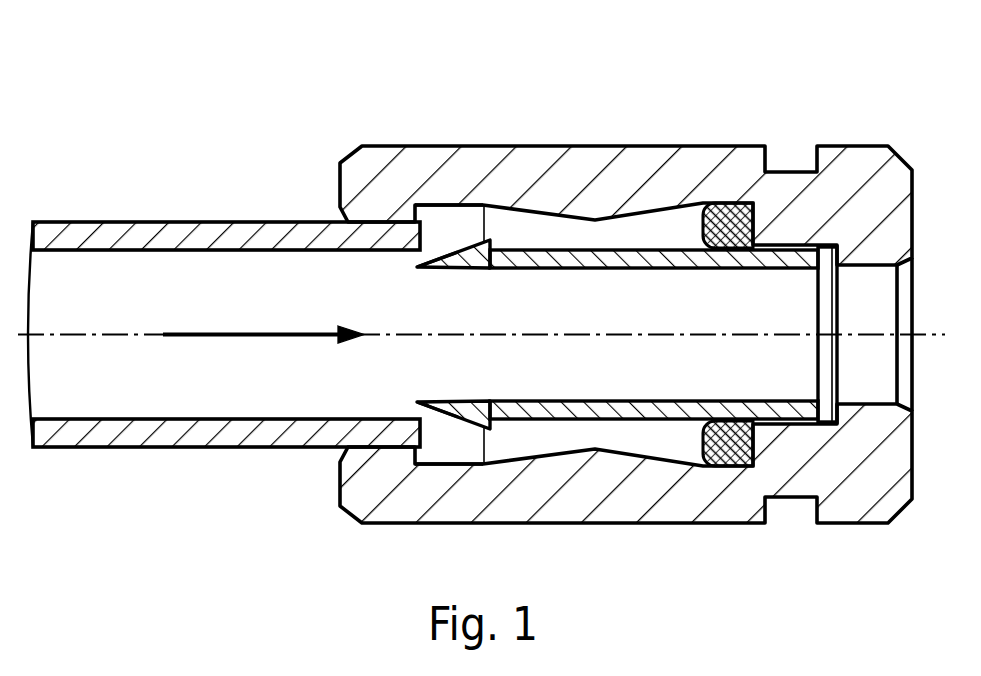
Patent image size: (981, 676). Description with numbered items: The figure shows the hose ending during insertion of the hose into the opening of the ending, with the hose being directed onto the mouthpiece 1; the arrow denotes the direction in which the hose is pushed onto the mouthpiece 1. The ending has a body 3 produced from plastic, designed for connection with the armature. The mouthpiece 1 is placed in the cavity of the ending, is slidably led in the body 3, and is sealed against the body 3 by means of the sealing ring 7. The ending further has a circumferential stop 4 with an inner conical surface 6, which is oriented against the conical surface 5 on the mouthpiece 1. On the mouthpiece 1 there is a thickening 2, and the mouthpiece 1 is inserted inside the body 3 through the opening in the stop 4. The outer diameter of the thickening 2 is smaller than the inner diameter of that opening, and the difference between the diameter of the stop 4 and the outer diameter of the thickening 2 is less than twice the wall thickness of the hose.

The mouthpiece 1 is at (527, 250).
The thickening 2 is at (488, 245).
The body 3 is at (842, 147).
The stop 4 is at (380, 222).
The conical surface 5 is at (458, 250).
The inner conical surface 6 is at (403, 213).
The sealing ring 7 is at (713, 202).